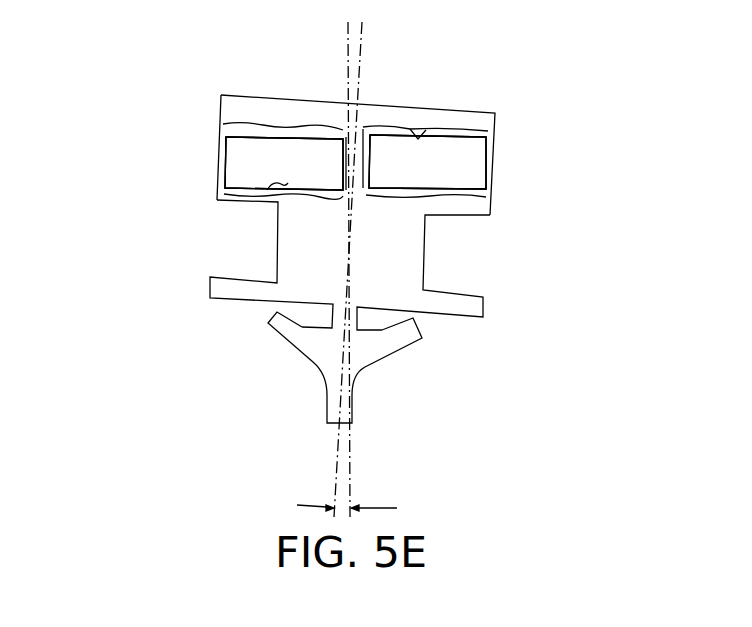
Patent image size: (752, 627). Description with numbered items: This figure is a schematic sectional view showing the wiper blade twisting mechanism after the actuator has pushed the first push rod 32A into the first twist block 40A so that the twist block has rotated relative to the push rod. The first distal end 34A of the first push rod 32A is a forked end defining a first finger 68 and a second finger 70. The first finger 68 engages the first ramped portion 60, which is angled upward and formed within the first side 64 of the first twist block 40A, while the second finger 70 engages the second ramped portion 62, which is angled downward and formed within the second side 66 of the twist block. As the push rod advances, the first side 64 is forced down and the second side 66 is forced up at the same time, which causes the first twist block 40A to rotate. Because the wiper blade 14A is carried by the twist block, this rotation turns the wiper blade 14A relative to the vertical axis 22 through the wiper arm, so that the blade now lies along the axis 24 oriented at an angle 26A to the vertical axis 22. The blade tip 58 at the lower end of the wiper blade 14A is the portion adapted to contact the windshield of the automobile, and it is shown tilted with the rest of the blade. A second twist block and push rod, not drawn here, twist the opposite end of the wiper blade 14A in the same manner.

The wiper blade 14A is at (425, 252).
The vertical axis 22 is at (351, 463).
The axis 24 is at (329, 475).
The angle 26A is at (367, 509).
The first push rod 32A is at (320, 164).
The first distal end 34A is at (366, 164).
The first twist block 40A is at (466, 207).
The blade tip 58 is at (327, 406).
The first ramped portion 60 is at (266, 201).
The second ramped portion 62 is at (425, 137).
The first side 64 is at (219, 109).
The second side 66 is at (489, 204).
The first finger 68 is at (242, 165).
The second finger 70 is at (474, 153).